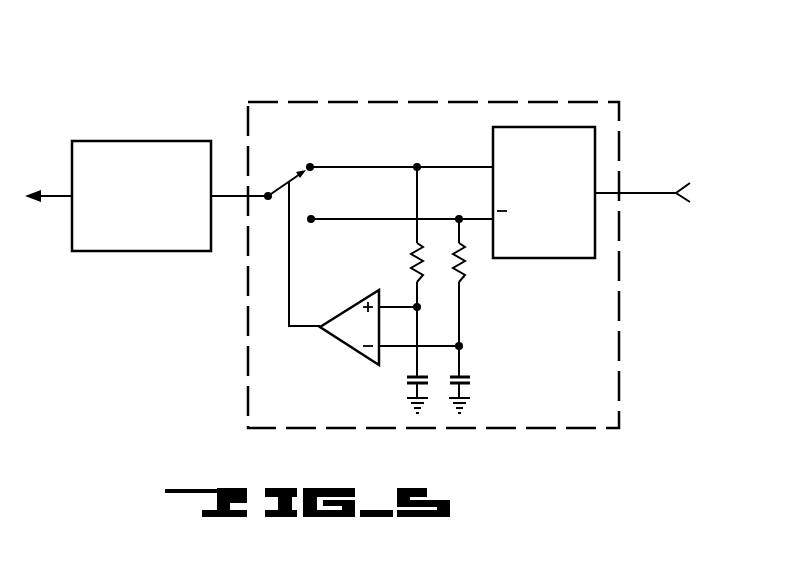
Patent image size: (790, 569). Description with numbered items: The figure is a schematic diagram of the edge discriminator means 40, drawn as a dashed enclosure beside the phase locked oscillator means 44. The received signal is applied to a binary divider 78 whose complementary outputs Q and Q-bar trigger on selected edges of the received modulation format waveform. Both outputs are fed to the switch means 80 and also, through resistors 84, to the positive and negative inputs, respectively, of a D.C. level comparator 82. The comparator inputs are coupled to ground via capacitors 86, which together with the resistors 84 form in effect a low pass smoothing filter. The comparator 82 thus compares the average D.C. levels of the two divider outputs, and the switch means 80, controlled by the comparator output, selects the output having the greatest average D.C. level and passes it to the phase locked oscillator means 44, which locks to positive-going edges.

The edge discriminator means 40 is at (628, 139).
The phase locked oscillator means 44 is at (151, 131).
The binary divider 78 is at (553, 268).
The switch means 80 is at (275, 172).
The D.C. level comparator 82 is at (336, 352).
The resistors 84 is at (452, 252).
The capacitors 86 is at (452, 393).